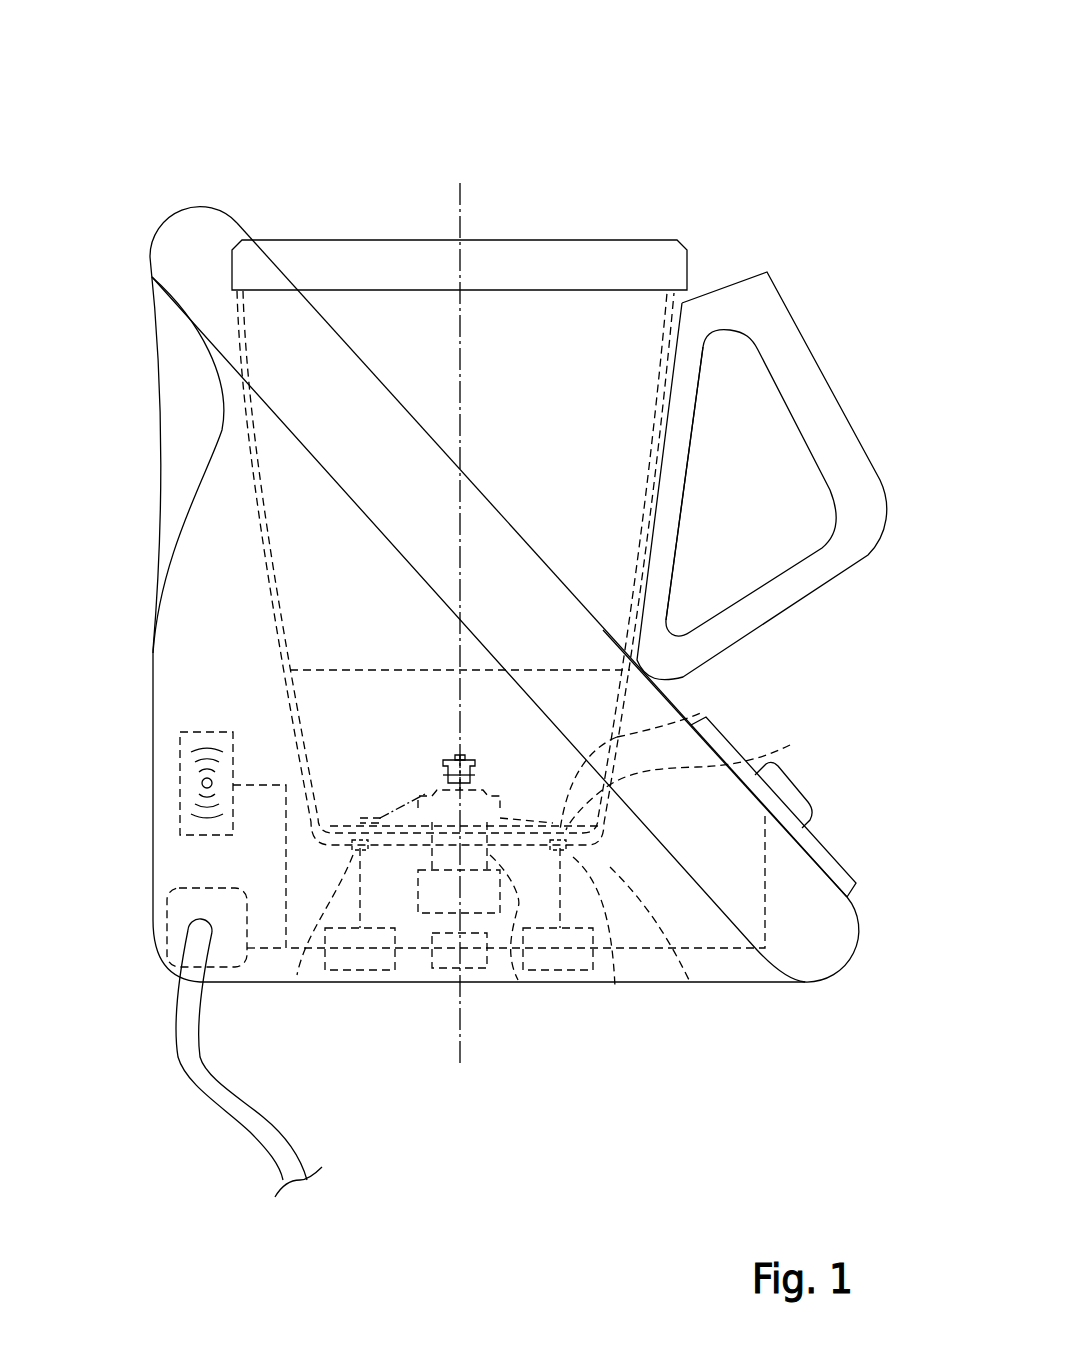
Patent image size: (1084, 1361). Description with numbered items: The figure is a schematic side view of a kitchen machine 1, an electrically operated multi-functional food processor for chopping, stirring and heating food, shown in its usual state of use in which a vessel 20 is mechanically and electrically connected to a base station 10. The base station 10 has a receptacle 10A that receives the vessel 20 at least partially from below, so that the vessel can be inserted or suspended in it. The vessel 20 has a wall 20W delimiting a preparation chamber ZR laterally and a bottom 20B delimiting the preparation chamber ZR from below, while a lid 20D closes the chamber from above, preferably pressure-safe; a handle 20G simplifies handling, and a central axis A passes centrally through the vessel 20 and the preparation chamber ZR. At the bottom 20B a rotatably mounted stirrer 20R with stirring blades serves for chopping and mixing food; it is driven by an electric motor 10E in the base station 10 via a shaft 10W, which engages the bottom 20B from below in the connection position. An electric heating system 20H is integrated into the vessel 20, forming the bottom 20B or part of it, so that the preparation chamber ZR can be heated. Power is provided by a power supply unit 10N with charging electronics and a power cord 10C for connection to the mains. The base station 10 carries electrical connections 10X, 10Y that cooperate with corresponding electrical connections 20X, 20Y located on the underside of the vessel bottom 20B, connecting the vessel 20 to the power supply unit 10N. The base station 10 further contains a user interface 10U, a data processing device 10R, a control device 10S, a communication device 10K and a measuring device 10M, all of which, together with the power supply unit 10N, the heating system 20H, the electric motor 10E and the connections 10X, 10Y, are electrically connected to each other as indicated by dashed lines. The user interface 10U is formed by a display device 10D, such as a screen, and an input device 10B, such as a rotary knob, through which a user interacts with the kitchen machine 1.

The kitchen machine 1 is at (152, 128).
The base station 10 is at (108, 230).
The receptacle 10A is at (230, 447).
The input device 10B is at (790, 791).
The power cord 10C is at (185, 1033).
The display device 10D is at (815, 853).
The electric motor 10E is at (490, 973).
The communication device 10K is at (177, 762).
The measuring device 10M is at (352, 985).
The power supply unit 10N is at (167, 920).
The data processing device 10R is at (575, 985).
The control device 10S is at (433, 980).
The user interface 10U is at (732, 722).
The shaft 10W is at (518, 980).
The electrical connection 10X is at (297, 975).
The electrical connection 10Y is at (615, 987).
The vessel 20 is at (700, 208).
The bottom 20B is at (703, 712).
The lid 20D is at (668, 263).
The handle 20G is at (790, 350).
The heating system 20H is at (690, 982).
The stirrer 20R is at (395, 790).
The wall 20W is at (657, 457).
The electrical connection 20X is at (312, 818).
The electrical connection 20Y is at (790, 745).
The preparation chamber ZR is at (393, 343).
The central axis A is at (462, 193).